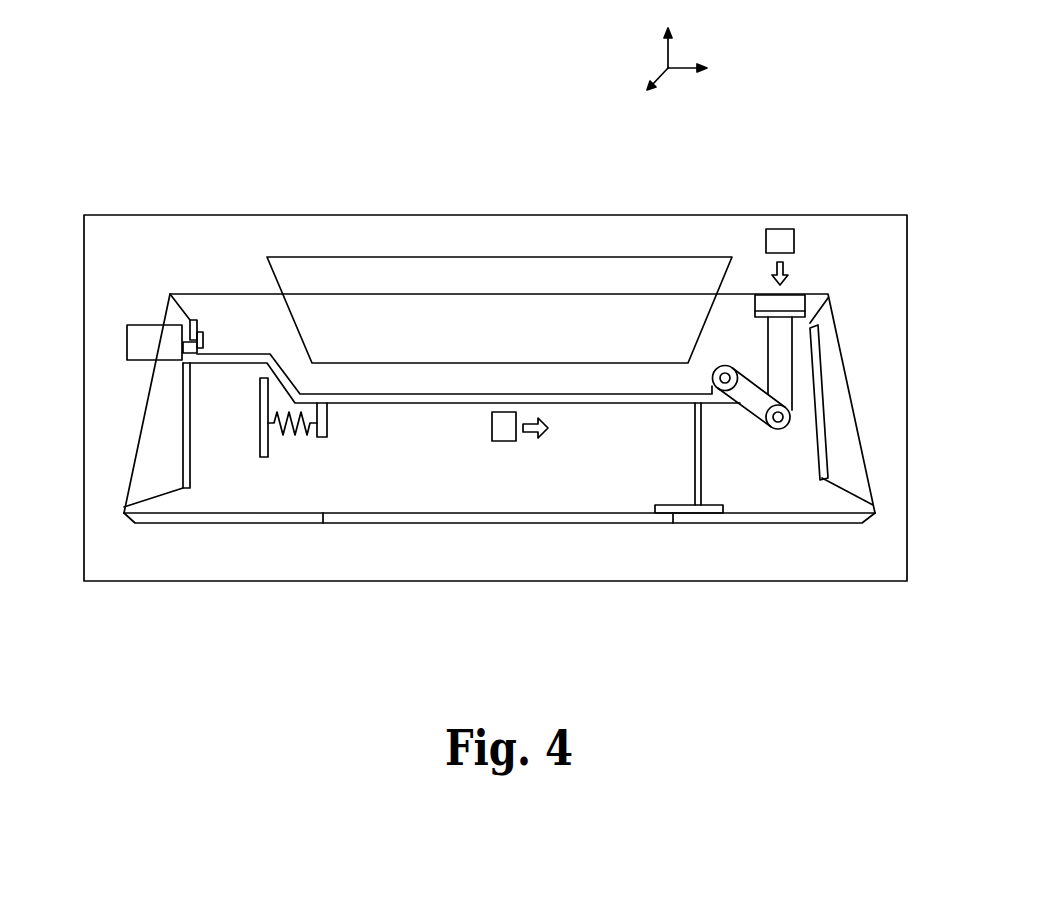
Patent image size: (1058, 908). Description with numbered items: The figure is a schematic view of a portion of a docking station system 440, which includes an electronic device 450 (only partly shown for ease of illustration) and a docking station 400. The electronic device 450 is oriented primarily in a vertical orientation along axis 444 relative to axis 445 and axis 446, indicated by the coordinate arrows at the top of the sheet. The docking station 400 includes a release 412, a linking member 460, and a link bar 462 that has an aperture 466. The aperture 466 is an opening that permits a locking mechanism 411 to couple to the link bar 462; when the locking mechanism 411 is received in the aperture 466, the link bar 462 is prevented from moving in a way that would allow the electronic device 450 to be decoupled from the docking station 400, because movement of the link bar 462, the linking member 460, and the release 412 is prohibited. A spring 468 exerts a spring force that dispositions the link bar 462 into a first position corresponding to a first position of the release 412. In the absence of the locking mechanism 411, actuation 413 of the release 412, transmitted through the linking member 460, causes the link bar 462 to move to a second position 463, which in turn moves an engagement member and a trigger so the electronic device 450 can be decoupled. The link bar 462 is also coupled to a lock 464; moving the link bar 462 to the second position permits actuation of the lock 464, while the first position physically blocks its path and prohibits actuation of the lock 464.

The docking station system 440 is at (218, 152).
The docking station 400 is at (211, 275).
The electronic device 450 is at (377, 230).
The locking mechanism 411 is at (127, 343).
The aperture 466 is at (190, 347).
The link bar 462 is at (435, 404).
The spring 468 is at (295, 435).
The second position 463 is at (490, 427).
The lock 464 is at (708, 512).
The linking member 460 is at (750, 415).
The release 412 is at (793, 305).
The actuation 413 is at (773, 229).
The axis 444 is at (667, 34).
The axis 445 is at (705, 69).
The axis 446 is at (637, 91).